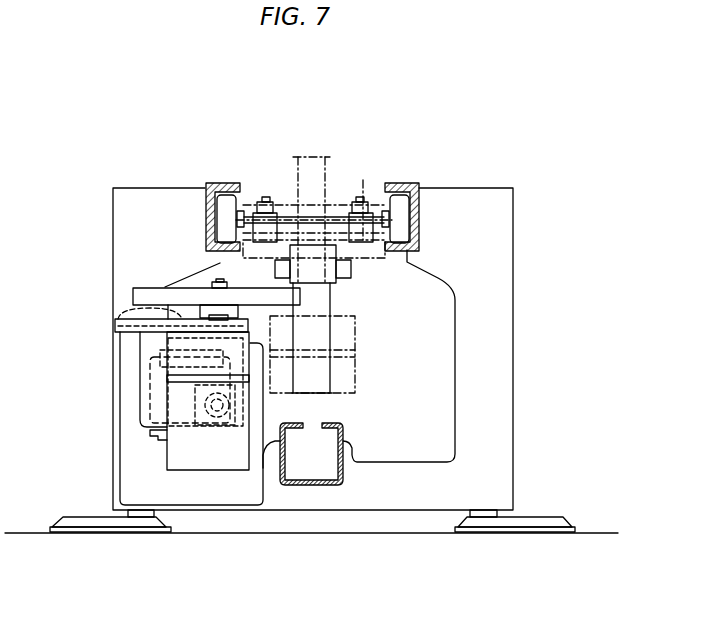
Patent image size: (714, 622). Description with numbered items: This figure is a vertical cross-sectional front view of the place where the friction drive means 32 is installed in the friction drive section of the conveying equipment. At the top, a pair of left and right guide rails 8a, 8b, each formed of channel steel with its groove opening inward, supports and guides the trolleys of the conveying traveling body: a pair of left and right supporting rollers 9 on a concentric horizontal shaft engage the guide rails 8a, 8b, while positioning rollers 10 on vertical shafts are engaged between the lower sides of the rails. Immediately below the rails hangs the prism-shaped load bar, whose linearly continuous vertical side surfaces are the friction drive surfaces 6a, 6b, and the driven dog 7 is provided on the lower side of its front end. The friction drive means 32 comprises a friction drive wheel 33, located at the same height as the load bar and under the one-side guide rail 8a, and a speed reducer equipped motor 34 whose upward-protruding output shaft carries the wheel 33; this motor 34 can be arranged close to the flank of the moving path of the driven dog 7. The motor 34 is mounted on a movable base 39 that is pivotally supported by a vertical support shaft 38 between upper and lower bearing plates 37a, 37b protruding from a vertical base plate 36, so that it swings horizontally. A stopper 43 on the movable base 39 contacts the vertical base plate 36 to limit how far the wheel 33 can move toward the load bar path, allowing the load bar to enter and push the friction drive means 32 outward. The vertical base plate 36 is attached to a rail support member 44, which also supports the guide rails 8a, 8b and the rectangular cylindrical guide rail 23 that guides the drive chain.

The friction drive surface 6a is at (262, 298).
The friction drive surface 6b is at (335, 310).
The driven dog 7 is at (357, 368).
The guide rail 8a is at (222, 183).
The guide rail 8b is at (407, 183).
The supporting roller 9 is at (220, 217).
The positioning roller 10 is at (266, 250).
The rectangular cylindrical guide rail 23 is at (318, 486).
The friction drive means 32 is at (153, 284).
The friction drive wheel 33 is at (135, 297).
The speed reducer equipped motor 34 is at (210, 460).
The vertical base plate 36 is at (128, 417).
The upper bearing plate 37a is at (150, 360).
The lower bearing plate 37b is at (147, 437).
The vertical support shaft 38 is at (118, 320).
The movable base 39 is at (160, 388).
The stopper 43 is at (222, 416).
The rail support member 44 is at (493, 325).